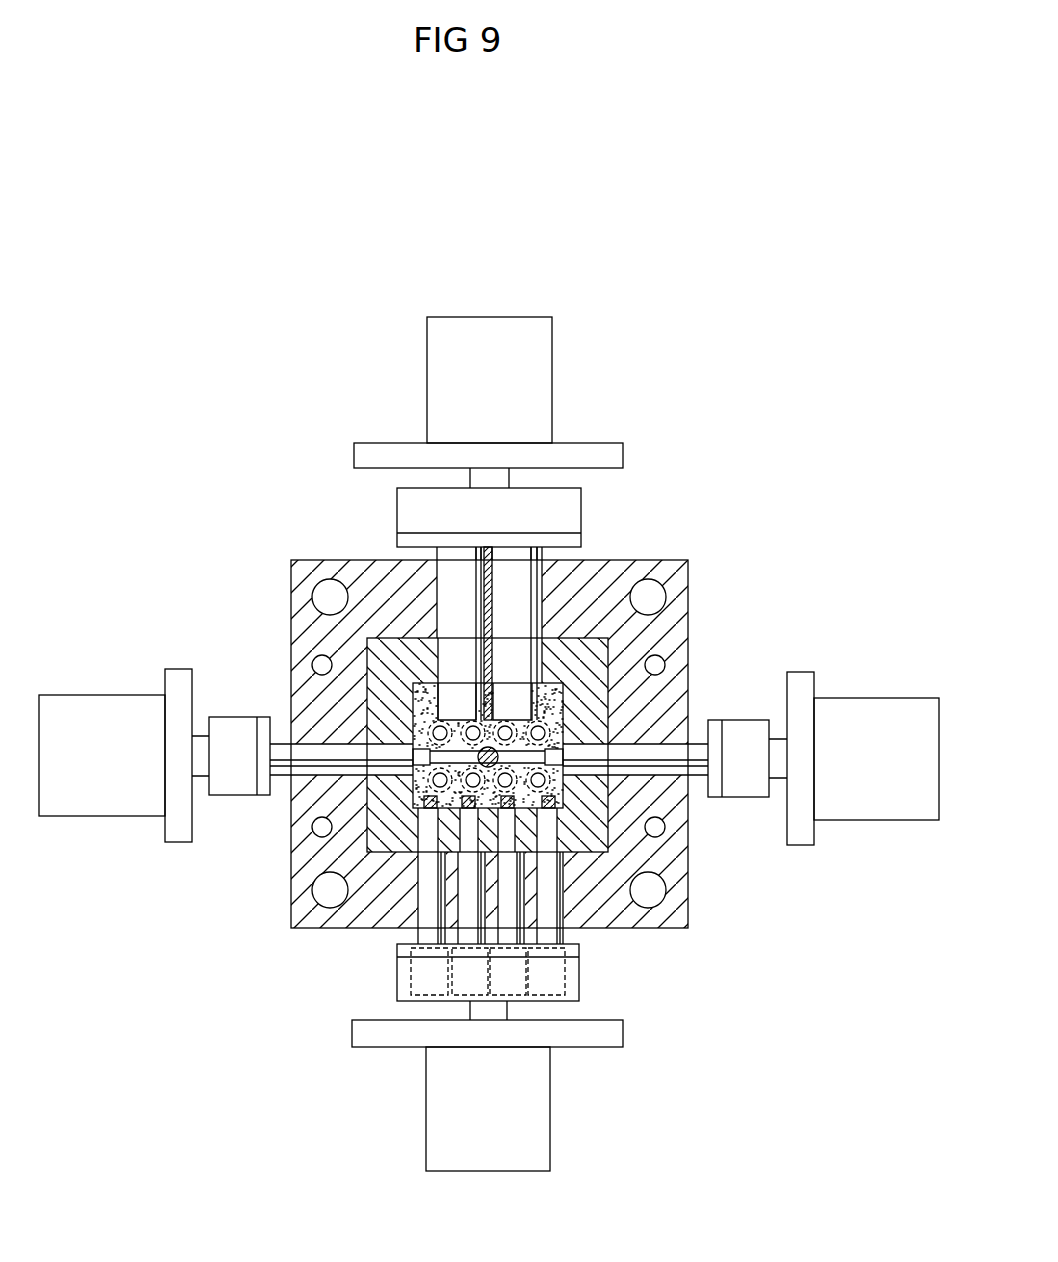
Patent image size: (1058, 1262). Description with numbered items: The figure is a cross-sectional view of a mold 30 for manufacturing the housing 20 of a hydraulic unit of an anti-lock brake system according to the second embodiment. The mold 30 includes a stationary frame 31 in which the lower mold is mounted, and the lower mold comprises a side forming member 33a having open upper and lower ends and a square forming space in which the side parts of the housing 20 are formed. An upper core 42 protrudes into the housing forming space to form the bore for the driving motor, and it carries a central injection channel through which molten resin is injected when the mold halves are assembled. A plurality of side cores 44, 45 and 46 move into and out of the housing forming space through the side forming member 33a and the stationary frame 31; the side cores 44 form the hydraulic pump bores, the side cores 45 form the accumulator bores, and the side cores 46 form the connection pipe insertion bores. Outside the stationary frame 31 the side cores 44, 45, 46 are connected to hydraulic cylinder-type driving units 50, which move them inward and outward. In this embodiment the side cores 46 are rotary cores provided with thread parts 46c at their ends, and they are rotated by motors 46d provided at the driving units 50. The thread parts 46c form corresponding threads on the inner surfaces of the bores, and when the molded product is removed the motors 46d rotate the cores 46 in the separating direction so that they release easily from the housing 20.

The mold 30 is at (281, 484).
The stationary frame 31 is at (682, 580).
The side forming member 33a is at (597, 642).
The side cores for accumulator bores 45 is at (528, 598).
The housing 20 is at (382, 775).
The upper core 42 is at (493, 767).
The side cores for hydraulic pump bores 44 is at (315, 747).
The side cores for connection pipe insertion bores 46 is at (547, 890).
The thread parts 46c is at (420, 792).
The motors 46d is at (413, 985).
The hydraulic cylinder-type driving units 50 is at (542, 363).